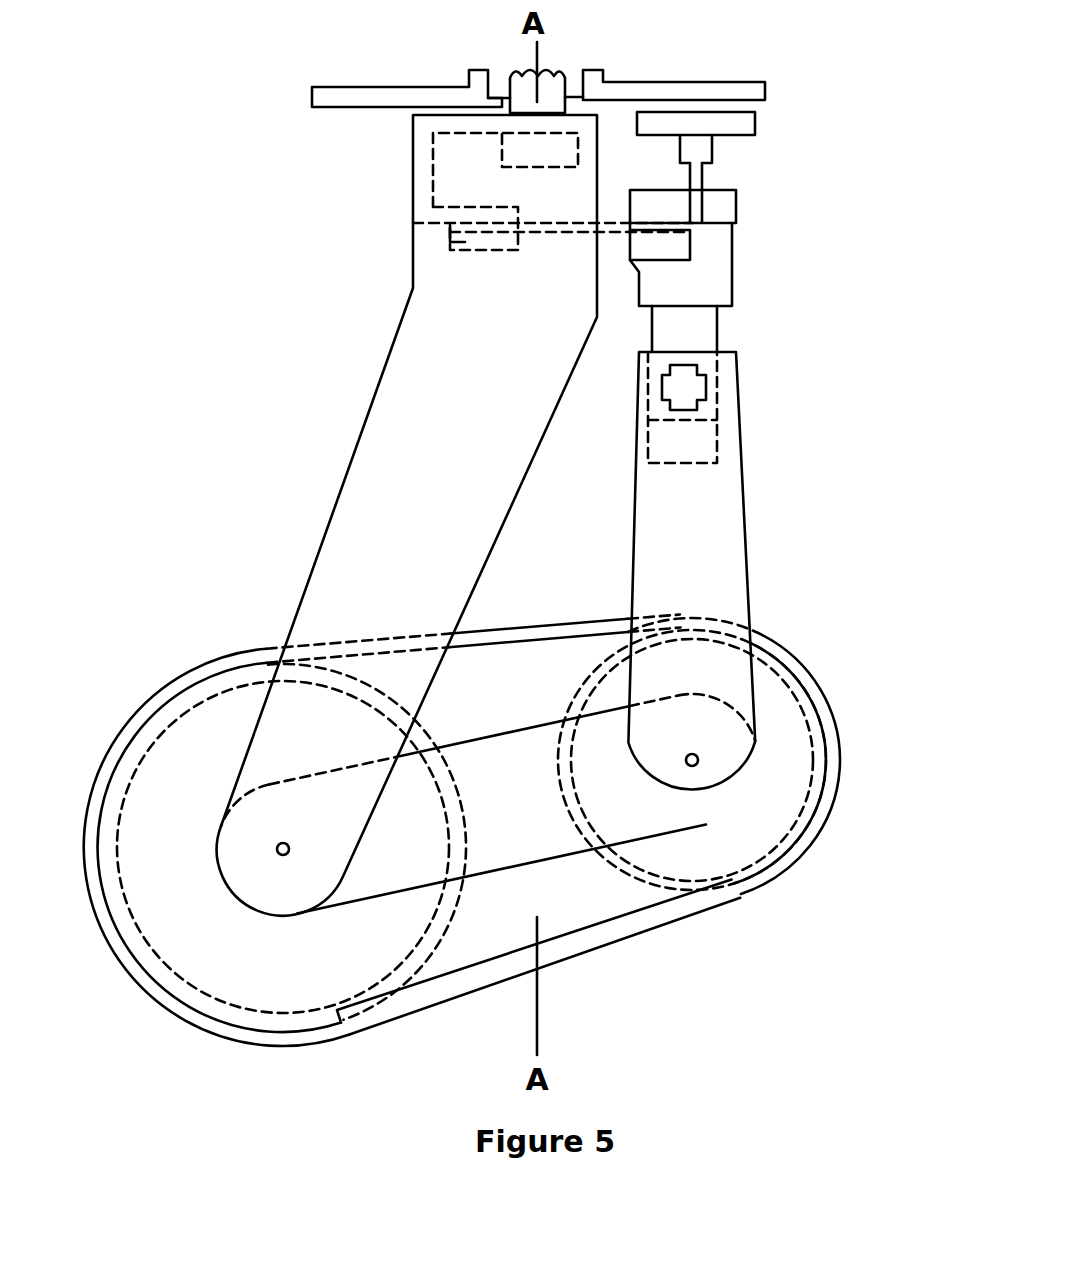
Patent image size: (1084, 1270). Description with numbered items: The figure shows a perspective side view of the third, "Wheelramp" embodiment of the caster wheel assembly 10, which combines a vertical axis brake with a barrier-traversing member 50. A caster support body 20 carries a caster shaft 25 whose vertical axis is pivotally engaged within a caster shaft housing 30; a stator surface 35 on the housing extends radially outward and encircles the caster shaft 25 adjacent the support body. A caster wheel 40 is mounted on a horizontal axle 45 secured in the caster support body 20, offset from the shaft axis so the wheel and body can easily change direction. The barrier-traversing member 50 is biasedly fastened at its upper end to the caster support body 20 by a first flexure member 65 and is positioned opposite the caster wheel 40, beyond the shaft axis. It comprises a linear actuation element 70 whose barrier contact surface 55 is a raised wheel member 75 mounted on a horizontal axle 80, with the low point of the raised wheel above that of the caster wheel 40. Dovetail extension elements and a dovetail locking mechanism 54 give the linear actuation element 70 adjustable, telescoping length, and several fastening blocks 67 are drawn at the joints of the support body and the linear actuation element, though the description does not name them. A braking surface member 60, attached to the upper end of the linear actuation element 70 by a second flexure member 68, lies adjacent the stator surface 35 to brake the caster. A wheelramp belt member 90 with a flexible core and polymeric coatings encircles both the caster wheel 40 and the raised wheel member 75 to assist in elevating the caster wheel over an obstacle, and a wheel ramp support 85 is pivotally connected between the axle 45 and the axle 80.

The caster wheel assembly 10 is at (215, 322).
The caster support body 20 is at (423, 163).
The caster shaft 25 is at (553, 82).
The caster shaft housing 30 is at (495, 80).
The stator surface 35 is at (316, 107).
The caster wheel 40 is at (233, 977).
The axle 45 is at (283, 840).
The barrier-traversing member 50 is at (797, 548).
The dovetail locking mechanism 54 is at (698, 392).
The barrier contact surface 55 is at (645, 932).
The braking surface member 60 is at (737, 130).
The first flexure member 65 is at (413, 223).
The fastener blocks 67 is at (465, 240).
The second flexure member 68 is at (698, 177).
The linear actuation element 70 is at (713, 508).
The raised wheel member 75 is at (752, 838).
The horizontal axle 80 is at (697, 753).
The wheel ramp support 85 is at (512, 840).
The wheelramp belt member 90 is at (570, 635).